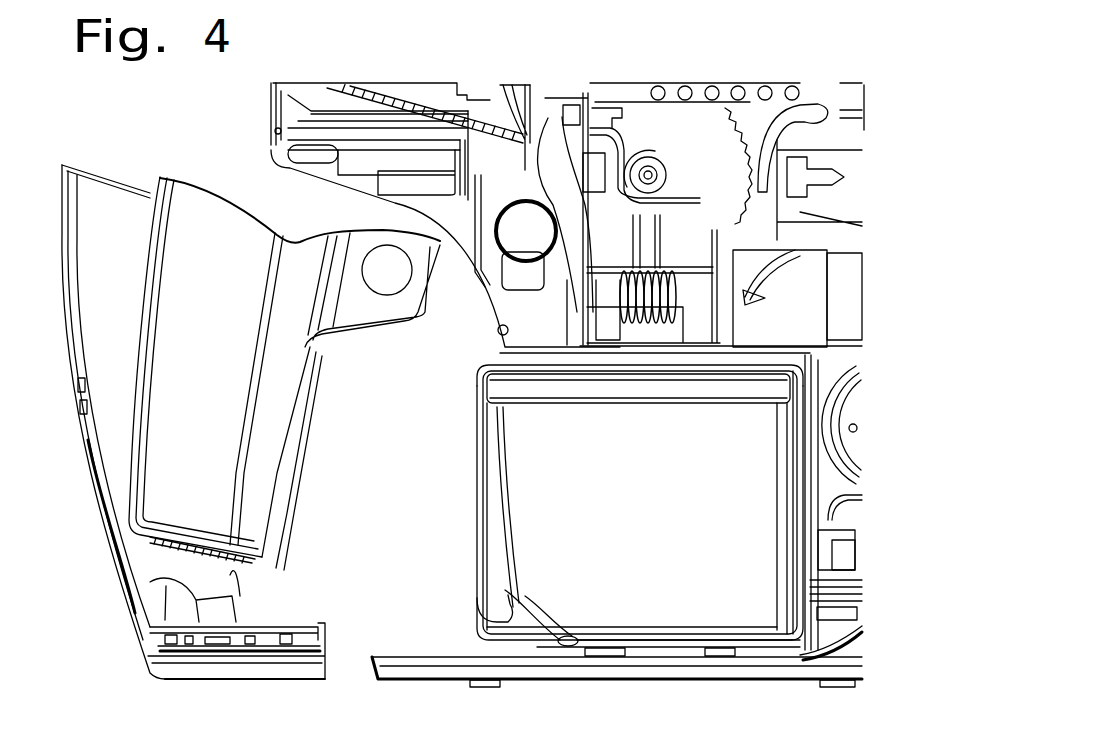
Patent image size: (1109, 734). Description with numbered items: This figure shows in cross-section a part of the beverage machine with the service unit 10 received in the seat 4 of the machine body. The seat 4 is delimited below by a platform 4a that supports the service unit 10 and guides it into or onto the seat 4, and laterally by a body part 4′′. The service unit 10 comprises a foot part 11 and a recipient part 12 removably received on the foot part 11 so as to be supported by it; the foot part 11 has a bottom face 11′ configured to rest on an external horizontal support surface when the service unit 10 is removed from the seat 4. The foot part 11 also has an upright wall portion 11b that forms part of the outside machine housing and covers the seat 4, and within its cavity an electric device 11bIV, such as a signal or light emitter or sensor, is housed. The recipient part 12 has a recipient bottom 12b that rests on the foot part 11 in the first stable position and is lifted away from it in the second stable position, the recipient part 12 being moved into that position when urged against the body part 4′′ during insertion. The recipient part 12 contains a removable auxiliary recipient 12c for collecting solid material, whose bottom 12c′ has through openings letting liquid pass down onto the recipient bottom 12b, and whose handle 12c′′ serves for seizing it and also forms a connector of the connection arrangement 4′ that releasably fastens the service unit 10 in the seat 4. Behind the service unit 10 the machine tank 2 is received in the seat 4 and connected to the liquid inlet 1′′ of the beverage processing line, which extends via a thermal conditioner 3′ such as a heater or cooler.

The service unit 10 is at (113, 141).
The foot part 11 is at (153, 657).
The bottom face 11′ is at (208, 679).
The upright wall portion 11b is at (97, 516).
The electric device 11bIV is at (78, 416).
The recipient part 12 is at (273, 567).
The recipient bottom 12b is at (247, 620).
The auxiliary recipient 12c is at (233, 230).
The bottom 12c′ is at (213, 543).
The handle 12c′′ is at (350, 263).
The seat 4 is at (410, 535).
The connection arrangement 4′ is at (530, 231).
The body part 4′′ is at (473, 381).
The platform 4a is at (390, 672).
The machine tank 2 is at (640, 509).
The liquid inlet 1′′ is at (823, 618).
The thermal conditioner 3′ is at (817, 85).